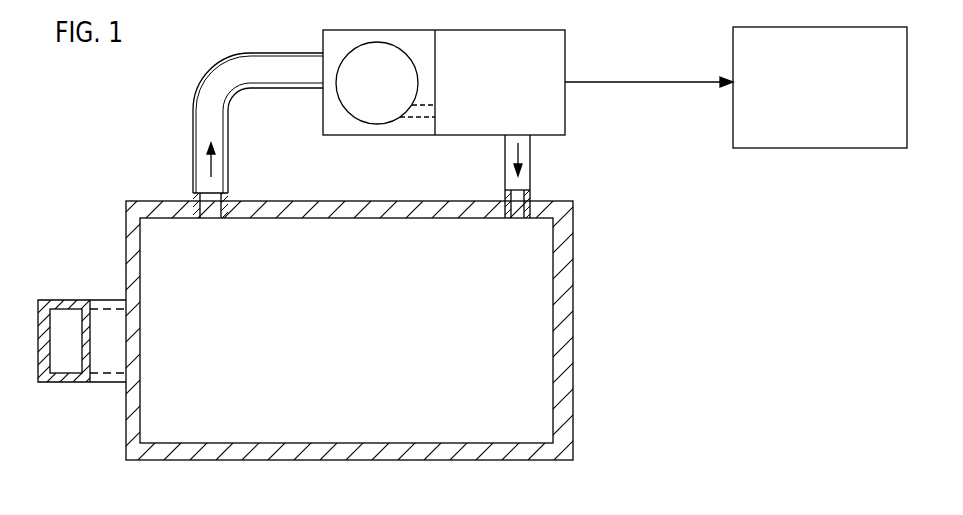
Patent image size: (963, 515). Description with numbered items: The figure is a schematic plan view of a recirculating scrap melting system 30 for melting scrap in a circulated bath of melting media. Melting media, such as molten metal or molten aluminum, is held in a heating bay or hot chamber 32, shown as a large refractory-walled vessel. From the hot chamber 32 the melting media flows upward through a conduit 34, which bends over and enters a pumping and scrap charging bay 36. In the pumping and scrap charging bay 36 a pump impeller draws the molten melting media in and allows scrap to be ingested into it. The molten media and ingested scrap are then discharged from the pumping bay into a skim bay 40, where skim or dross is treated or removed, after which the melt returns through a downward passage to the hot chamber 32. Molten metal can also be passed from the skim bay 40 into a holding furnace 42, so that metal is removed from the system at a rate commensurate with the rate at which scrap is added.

The recirculating scrap melting system 30 is at (92, 166).
The heating bay or hot chamber 32 is at (362, 346).
The conduit 34 is at (228, 182).
The pumping and scrap charging bay 36 is at (397, 47).
The skim bay 40 is at (447, 109).
The holding furnace 42 is at (790, 148).